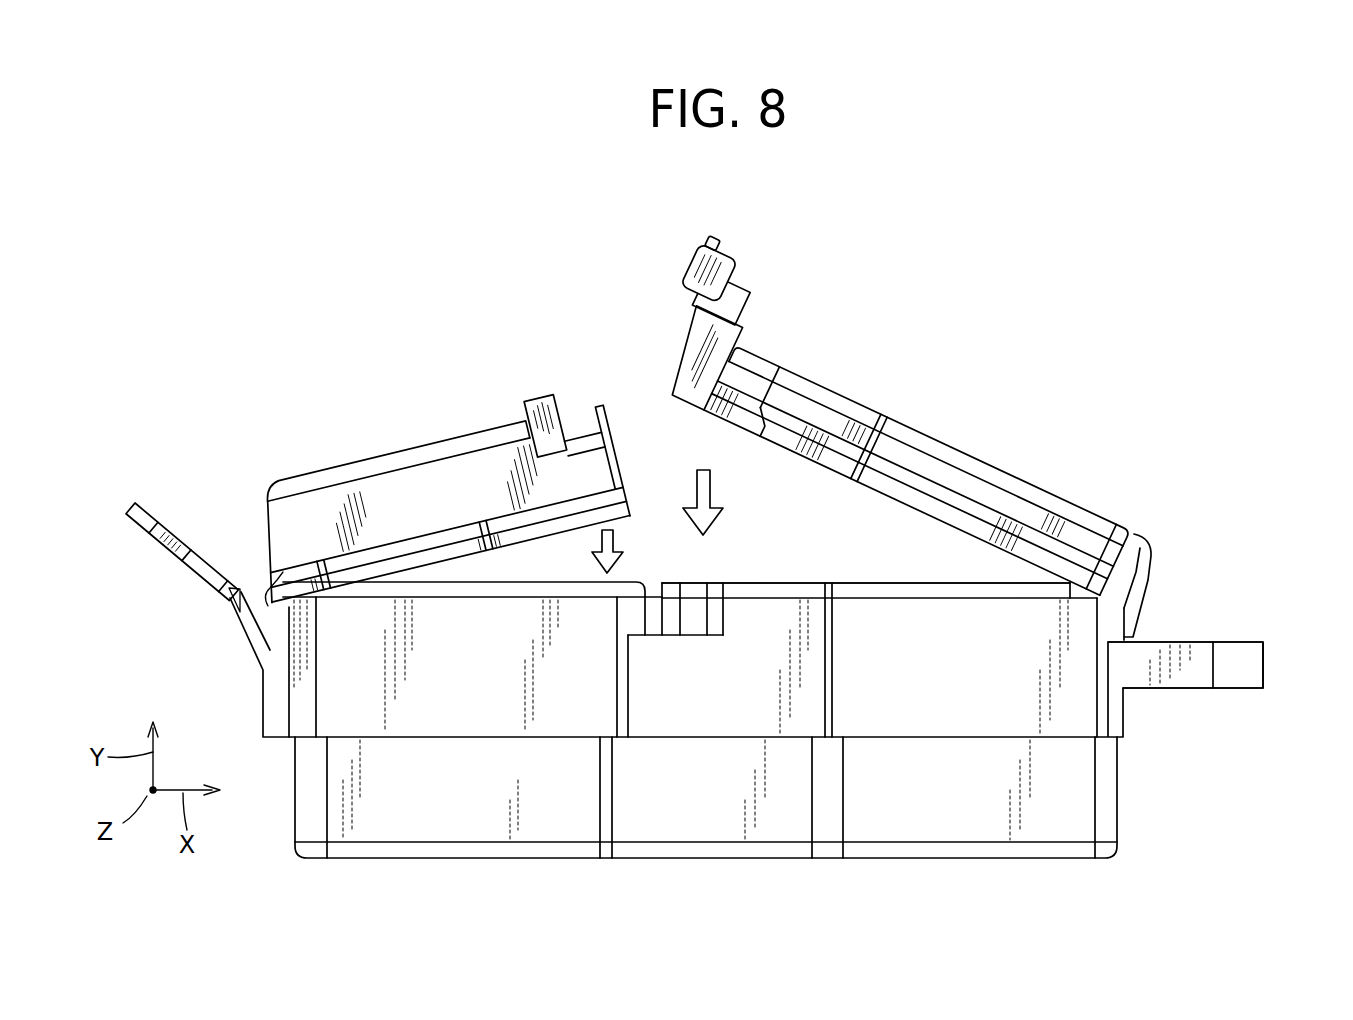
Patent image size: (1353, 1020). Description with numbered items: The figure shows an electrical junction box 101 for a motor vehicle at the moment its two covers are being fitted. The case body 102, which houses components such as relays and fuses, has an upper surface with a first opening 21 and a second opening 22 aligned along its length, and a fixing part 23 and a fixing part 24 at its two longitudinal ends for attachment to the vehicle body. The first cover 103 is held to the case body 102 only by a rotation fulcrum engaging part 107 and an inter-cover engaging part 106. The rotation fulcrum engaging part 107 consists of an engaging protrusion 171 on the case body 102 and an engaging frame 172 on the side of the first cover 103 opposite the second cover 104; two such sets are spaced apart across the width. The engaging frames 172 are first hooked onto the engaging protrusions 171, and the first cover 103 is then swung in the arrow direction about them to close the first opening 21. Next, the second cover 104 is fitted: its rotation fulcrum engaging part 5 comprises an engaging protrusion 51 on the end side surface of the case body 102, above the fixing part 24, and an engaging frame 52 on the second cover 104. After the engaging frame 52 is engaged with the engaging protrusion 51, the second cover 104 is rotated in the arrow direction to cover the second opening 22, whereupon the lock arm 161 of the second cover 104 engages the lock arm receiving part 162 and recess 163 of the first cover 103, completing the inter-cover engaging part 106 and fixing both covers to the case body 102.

The electrical junction box 101 is at (1083, 279).
The case body 102 is at (1130, 717).
The first cover 103 is at (420, 446).
The second cover 104 is at (972, 454).
The inter-cover engaging part 106 is at (697, 178).
The rotation fulcrum engaging part 107 is at (260, 402).
The lock arm 161 is at (712, 237).
The lock arm receiving part 162 is at (557, 400).
The recess 163 is at (582, 440).
The engaging protrusion 171 is at (255, 578).
The engaging frame 172 is at (268, 575).
The first opening 21 is at (530, 580).
The second opening 22 is at (790, 582).
The fixing part 23 is at (140, 512).
The fixing part 24 is at (1232, 640).
The rotation fulcrum engaging part 5 is at (1157, 488).
The engaging protrusion 51 is at (1130, 622).
The engaging frame 52 is at (1143, 608).